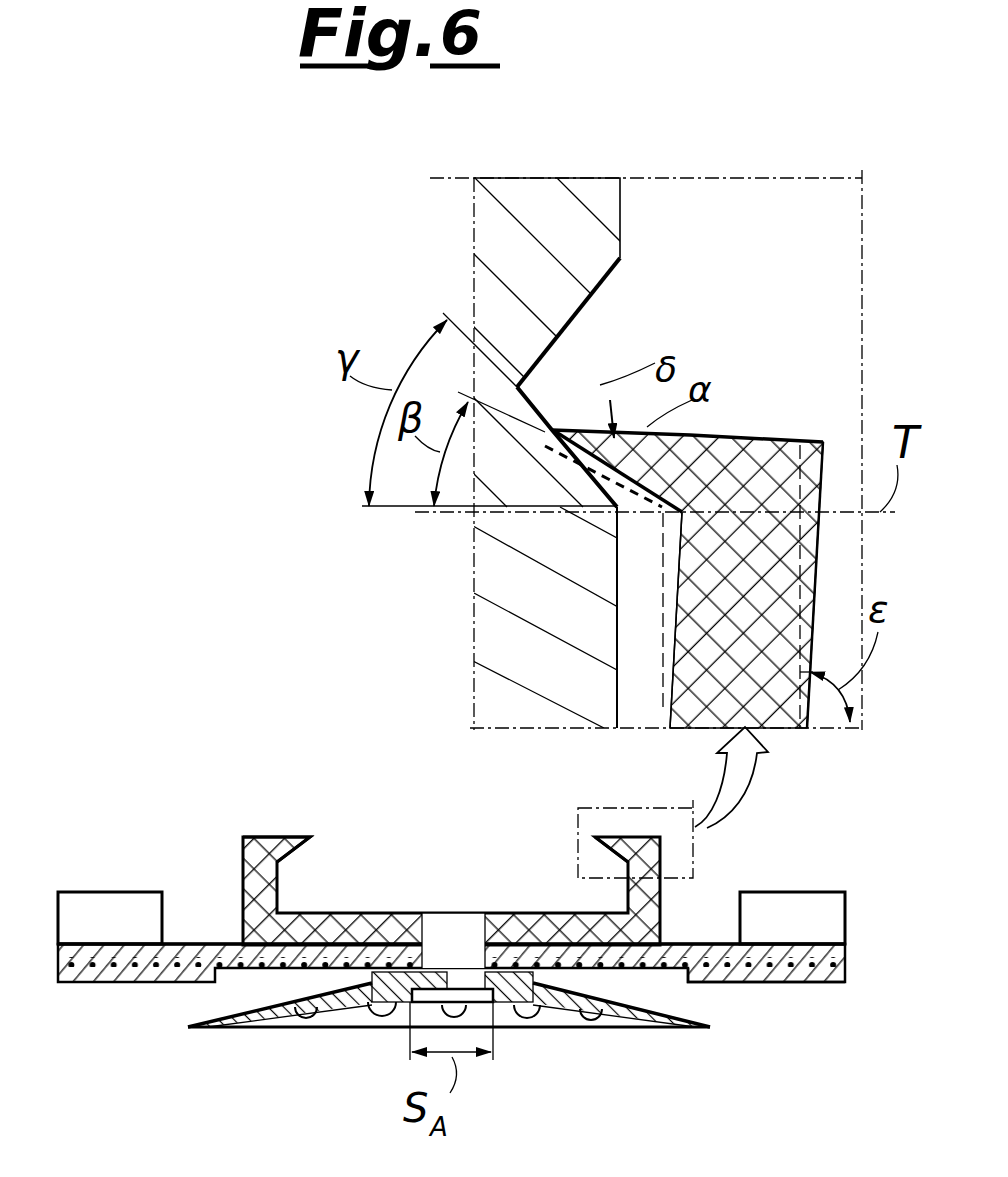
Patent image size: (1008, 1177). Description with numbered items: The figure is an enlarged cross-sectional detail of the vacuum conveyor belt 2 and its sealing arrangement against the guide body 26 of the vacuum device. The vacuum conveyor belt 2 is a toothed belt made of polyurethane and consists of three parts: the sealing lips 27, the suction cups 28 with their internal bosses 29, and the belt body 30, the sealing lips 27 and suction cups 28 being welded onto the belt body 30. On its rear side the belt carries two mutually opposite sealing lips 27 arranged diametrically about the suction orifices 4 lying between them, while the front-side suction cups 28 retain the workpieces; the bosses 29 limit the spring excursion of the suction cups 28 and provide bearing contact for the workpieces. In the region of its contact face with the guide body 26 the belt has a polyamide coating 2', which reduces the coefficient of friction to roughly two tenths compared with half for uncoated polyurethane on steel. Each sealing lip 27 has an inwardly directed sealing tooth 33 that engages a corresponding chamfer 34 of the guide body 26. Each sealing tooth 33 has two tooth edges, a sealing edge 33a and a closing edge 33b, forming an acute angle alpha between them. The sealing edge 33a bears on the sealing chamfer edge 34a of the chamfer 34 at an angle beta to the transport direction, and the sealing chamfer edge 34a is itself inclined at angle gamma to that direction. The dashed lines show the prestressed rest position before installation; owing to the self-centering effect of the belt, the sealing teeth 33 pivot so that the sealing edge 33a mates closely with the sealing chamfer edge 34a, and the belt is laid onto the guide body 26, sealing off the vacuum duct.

The vacuum conveyor belt 2 is at (451, 998).
The PA coating 2' is at (448, 1013).
The suction orifices 4 is at (455, 955).
The guide body 26 is at (493, 218).
The sealing lips 27 is at (780, 700).
The suction cups 28 is at (353, 995).
The internal bosses 29 is at (595, 1025).
The belt body 30 is at (737, 970).
The sealing teeth 33 is at (280, 836).
The sealing edge 33a is at (641, 497).
The closing edge 33b is at (590, 430).
The chamfer 34 is at (603, 318).
The sealing chamfer edge 34a is at (550, 389).